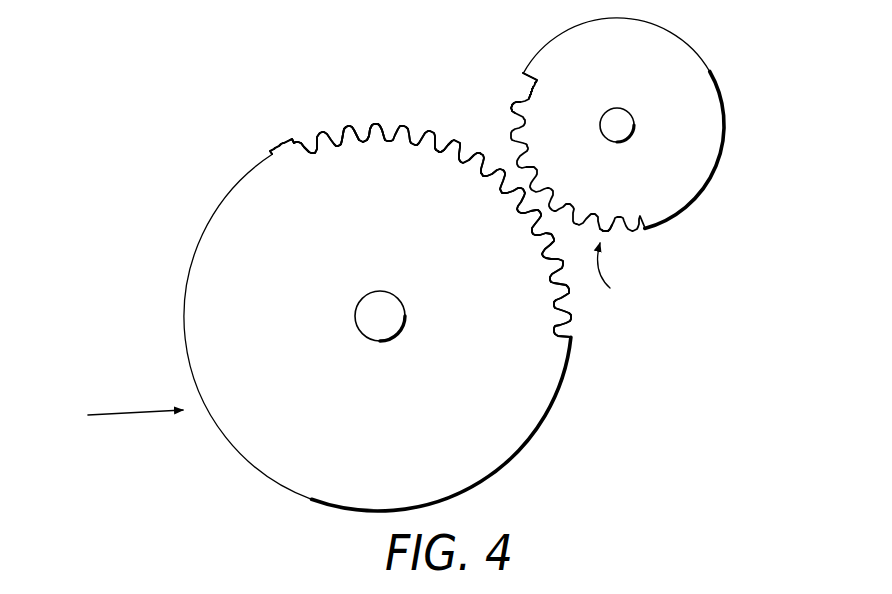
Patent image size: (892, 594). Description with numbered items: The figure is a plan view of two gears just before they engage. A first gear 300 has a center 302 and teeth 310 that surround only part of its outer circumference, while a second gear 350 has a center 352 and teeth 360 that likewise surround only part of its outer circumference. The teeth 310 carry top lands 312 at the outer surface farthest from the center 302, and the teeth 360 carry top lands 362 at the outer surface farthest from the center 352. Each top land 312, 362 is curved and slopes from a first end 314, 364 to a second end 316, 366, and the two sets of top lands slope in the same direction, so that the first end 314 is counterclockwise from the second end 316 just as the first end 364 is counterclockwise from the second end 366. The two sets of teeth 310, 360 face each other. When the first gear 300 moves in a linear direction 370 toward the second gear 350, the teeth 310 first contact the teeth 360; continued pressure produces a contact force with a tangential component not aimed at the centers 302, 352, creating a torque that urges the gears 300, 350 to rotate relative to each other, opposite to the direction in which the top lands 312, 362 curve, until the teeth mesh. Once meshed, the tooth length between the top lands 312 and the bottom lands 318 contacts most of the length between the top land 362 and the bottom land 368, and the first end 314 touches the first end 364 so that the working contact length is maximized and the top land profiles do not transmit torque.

The first gear 300 is at (247, 173).
The center 302 is at (402, 308).
The teeth 310 is at (330, 100).
The top land 312 is at (292, 138).
The first end 314 is at (335, 122).
The second end 316 is at (357, 120).
The bottom land 318 is at (446, 150).
The second gear 350 is at (712, 72).
The center 352 is at (633, 120).
The teeth 360 is at (619, 273).
The top land 362 is at (613, 232).
The first end 364 is at (506, 110).
The second end 366 is at (517, 88).
The bottom land 368 is at (533, 91).
The linear direction 370 is at (128, 412).